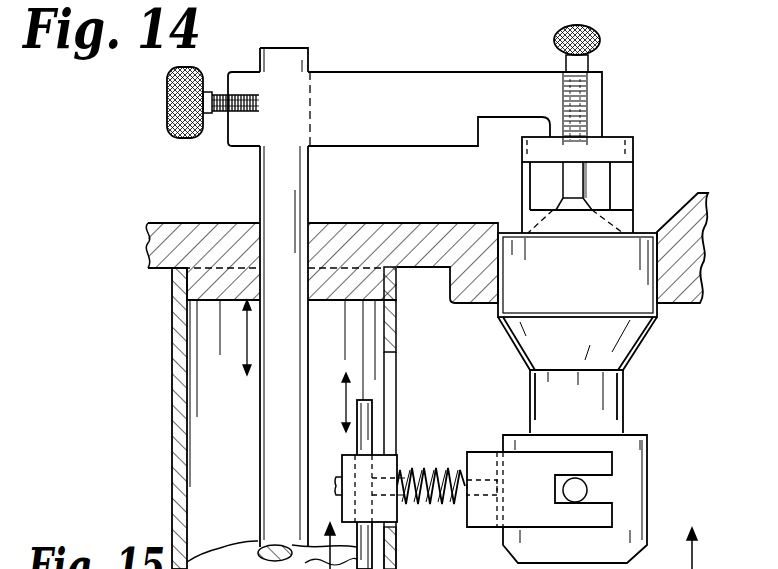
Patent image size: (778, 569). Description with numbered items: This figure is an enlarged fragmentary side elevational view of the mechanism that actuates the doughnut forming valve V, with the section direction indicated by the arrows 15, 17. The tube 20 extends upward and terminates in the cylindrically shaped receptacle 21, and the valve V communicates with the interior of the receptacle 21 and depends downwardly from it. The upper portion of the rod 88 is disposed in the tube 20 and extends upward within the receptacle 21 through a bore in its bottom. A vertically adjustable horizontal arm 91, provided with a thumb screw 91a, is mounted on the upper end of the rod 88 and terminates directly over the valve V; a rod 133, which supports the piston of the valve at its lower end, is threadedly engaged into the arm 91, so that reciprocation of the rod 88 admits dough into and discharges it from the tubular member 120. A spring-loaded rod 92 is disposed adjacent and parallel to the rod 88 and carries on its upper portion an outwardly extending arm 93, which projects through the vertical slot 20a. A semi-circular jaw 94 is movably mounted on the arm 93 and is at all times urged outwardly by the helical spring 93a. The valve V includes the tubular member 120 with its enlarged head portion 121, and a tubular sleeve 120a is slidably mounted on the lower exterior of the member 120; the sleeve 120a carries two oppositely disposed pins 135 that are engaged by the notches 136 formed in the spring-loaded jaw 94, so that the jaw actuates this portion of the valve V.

The clamp screw with knurled knob 15 is at (592, 87).
The annular shaped air space 17 is at (513, 546).
The tube 20 is at (398, 546).
The vertical slot 20a is at (388, 355).
The receptacle 21 is at (402, 222).
The rod 88 is at (309, 192).
The horizontal arm 91 is at (415, 109).
The thumb screw 91a is at (170, 138).
The spring-loaded rod 92 is at (357, 437).
The arm 93 is at (437, 500).
The helical spring 93a is at (416, 476).
The semi-circular jaw 94 is at (539, 489).
The tubular member 120 is at (625, 400).
The tubular sleeve 120a is at (650, 513).
The enlarged head portion 121 is at (577, 227).
The rod 133 is at (586, 203).
The pins 135 is at (588, 492).
The notches 136 is at (600, 508).
The valve V is at (645, 348).